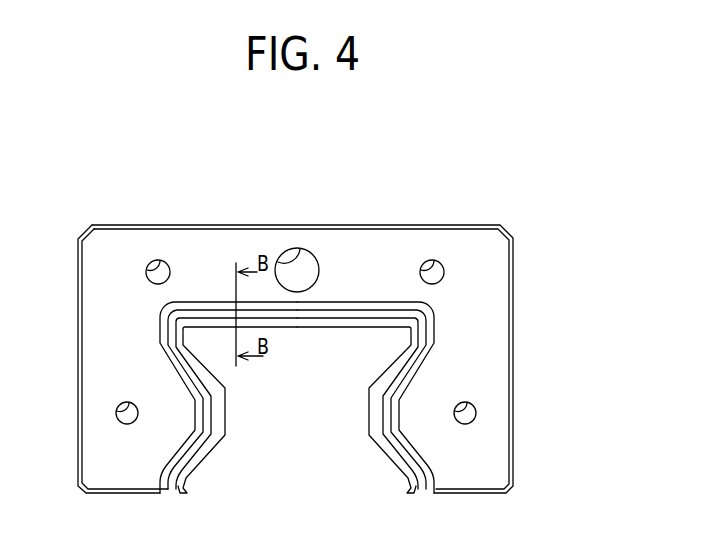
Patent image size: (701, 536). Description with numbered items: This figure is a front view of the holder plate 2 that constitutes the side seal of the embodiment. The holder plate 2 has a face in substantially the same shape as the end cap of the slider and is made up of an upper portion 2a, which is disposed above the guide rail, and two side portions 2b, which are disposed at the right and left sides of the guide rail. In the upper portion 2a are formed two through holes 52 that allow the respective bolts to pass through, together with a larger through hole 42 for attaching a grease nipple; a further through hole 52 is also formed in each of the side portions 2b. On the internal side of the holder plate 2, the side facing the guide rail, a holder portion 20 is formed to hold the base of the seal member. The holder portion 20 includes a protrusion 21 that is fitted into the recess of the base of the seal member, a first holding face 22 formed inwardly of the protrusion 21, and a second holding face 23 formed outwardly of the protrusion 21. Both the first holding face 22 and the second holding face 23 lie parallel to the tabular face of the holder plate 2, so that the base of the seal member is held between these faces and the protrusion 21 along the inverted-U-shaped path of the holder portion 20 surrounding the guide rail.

The holder plate 2 is at (478, 226).
The upper portion 2a is at (370, 258).
The side portions 2b is at (118, 368).
The holder portion 20 is at (297, 397).
The protrusion 21 is at (322, 313).
The first holding face 22 is at (358, 398).
The second holding face 23 is at (348, 304).
The through hole 42 is at (305, 248).
The through holes 52 is at (160, 261).